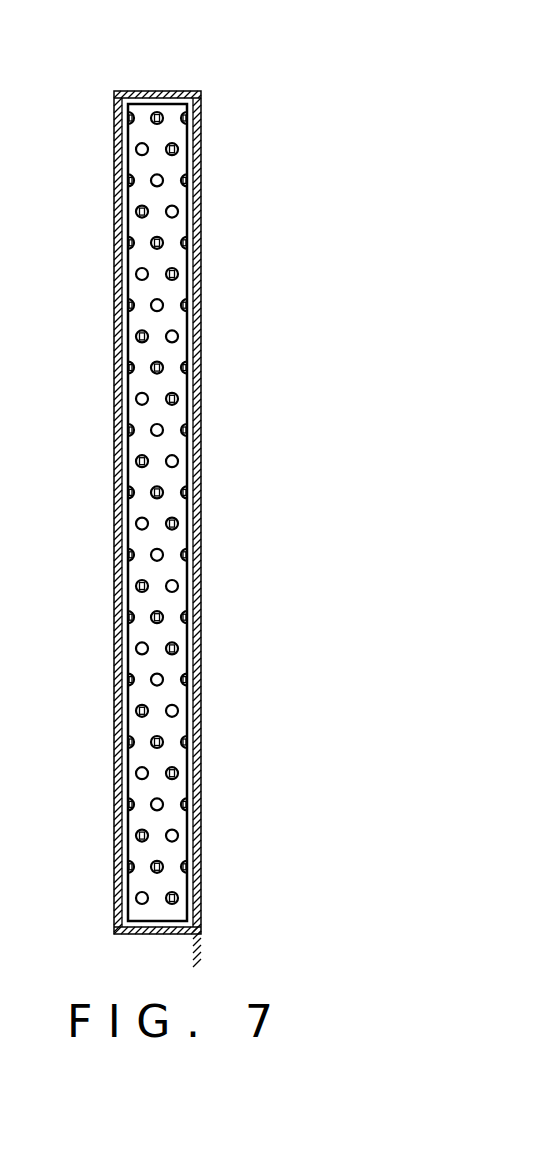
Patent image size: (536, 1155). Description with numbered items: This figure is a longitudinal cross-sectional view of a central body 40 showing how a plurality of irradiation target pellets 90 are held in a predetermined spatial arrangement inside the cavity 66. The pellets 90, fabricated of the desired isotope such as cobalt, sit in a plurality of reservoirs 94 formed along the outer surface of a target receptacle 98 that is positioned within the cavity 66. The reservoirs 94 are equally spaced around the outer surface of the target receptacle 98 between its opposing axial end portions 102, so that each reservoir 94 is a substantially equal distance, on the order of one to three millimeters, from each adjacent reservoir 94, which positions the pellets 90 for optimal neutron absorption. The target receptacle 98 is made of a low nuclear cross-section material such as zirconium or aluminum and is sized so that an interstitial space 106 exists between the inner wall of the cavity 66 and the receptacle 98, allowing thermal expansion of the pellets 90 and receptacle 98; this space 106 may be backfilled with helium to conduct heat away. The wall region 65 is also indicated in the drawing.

The central body 40 is at (191, 69).
The side wall 65 is at (200, 370).
The cavity 66 is at (197, 655).
The irradiation target pellets 90 is at (130, 180).
The reservoirs 94 is at (156, 115).
The target receptacle 98 is at (130, 553).
The axial end portions 102 is at (168, 108).
The interstitial space 106 is at (190, 521).